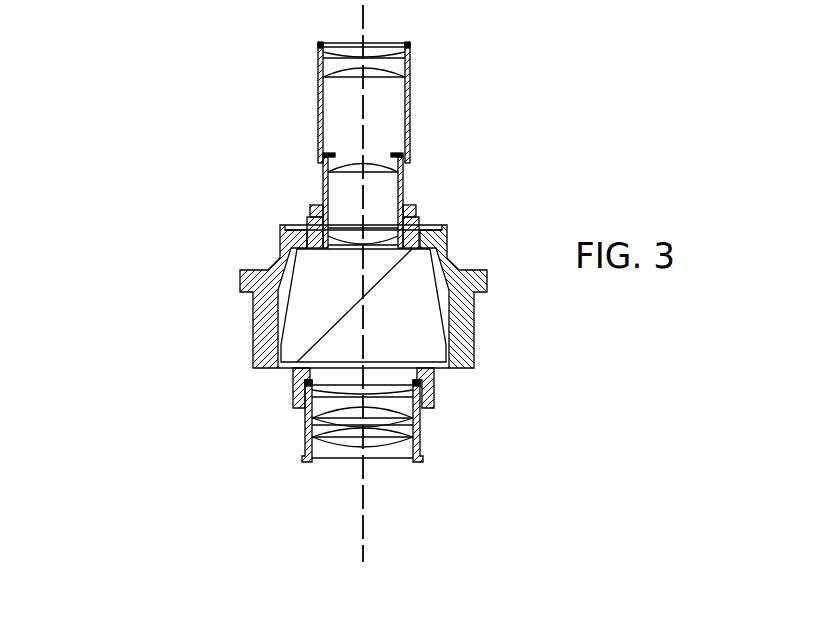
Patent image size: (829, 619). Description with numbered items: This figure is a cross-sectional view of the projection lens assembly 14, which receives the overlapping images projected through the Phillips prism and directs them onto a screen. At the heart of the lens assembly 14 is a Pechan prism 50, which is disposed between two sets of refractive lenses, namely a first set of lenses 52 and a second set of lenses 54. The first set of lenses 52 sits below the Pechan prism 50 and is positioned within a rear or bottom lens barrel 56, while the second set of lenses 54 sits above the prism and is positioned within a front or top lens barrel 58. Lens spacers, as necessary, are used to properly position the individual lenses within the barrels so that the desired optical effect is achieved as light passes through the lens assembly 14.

The lens assembly 14 is at (247, 178).
The Pechan prism 50 is at (400, 318).
The first set of lenses 52 is at (447, 377).
The second set of lenses 54 is at (440, 60).
The bottom lens barrel 56 is at (302, 410).
The top lens barrel 58 is at (320, 93).